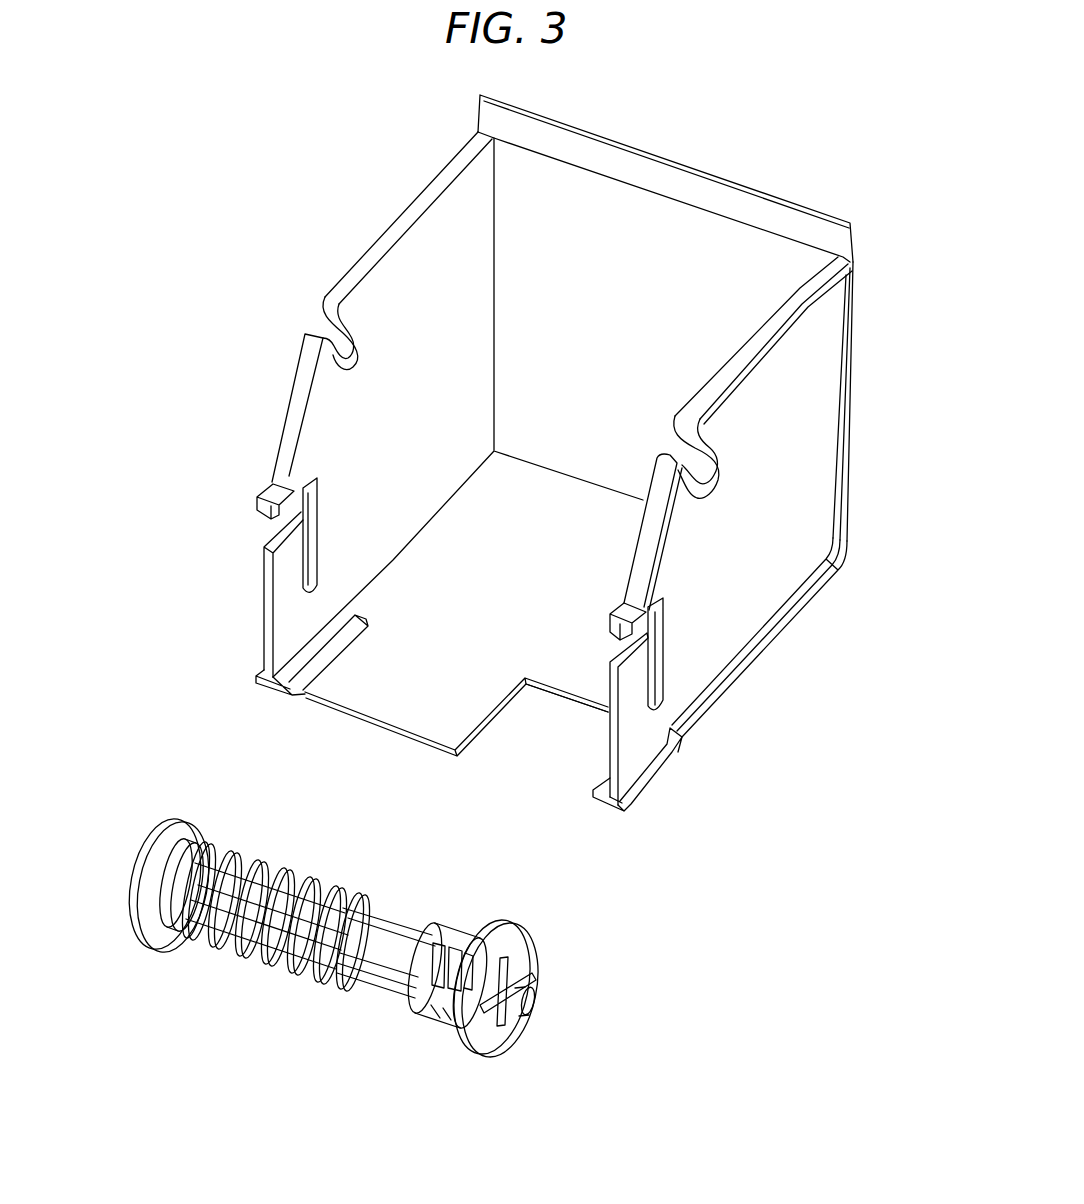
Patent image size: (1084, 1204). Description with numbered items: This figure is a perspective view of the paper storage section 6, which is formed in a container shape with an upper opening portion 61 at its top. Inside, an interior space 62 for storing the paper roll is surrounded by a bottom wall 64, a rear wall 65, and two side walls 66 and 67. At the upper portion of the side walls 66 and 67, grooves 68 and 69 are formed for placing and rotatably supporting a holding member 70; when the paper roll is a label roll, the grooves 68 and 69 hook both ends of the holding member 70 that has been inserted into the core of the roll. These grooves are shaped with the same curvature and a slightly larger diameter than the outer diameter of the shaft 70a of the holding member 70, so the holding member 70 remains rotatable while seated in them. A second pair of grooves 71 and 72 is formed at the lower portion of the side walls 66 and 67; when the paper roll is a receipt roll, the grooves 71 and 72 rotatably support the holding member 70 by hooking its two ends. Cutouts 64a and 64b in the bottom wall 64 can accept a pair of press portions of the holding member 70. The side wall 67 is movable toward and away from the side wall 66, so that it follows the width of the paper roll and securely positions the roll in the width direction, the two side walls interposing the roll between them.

The paper storage section 6 is at (740, 150).
The upper opening portion 61 is at (588, 203).
The interior space 62 is at (470, 577).
The bottom wall 64 is at (483, 637).
The cutout 64a is at (300, 694).
The cutout 64b is at (535, 765).
The rear wall 65 is at (655, 228).
The side wall 66 is at (421, 248).
The side wall 67 is at (817, 472).
The groove 68 is at (322, 308).
The groove 69 is at (713, 475).
The holding member 70 is at (525, 952).
The shaft 70a is at (133, 872).
The groove 71 is at (298, 490).
The groove 72 is at (653, 680).